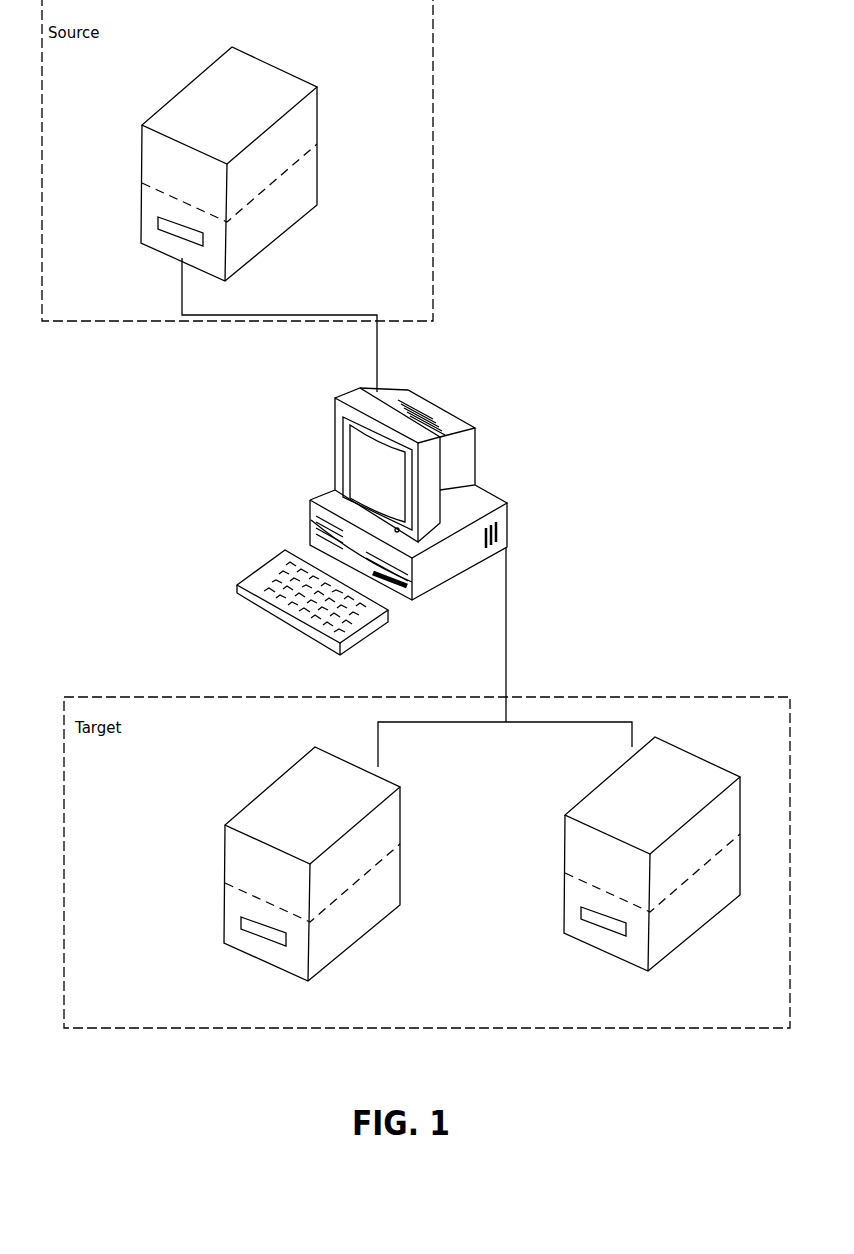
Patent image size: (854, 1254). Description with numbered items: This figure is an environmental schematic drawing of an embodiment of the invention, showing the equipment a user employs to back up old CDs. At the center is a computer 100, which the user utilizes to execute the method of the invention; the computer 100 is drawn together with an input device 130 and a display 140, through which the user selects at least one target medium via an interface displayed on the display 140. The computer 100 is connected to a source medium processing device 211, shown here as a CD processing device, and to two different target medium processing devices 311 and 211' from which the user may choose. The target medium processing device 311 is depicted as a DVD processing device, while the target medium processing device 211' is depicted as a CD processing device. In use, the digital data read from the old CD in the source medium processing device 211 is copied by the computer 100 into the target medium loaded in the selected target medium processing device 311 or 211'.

The source medium processing device 211 is at (272, 164).
The computer 100 is at (320, 500).
The display 140 is at (337, 398).
The input device 130 is at (247, 580).
The target medium processing device 311 is at (257, 810).
The target medium processing device 211' is at (611, 854).